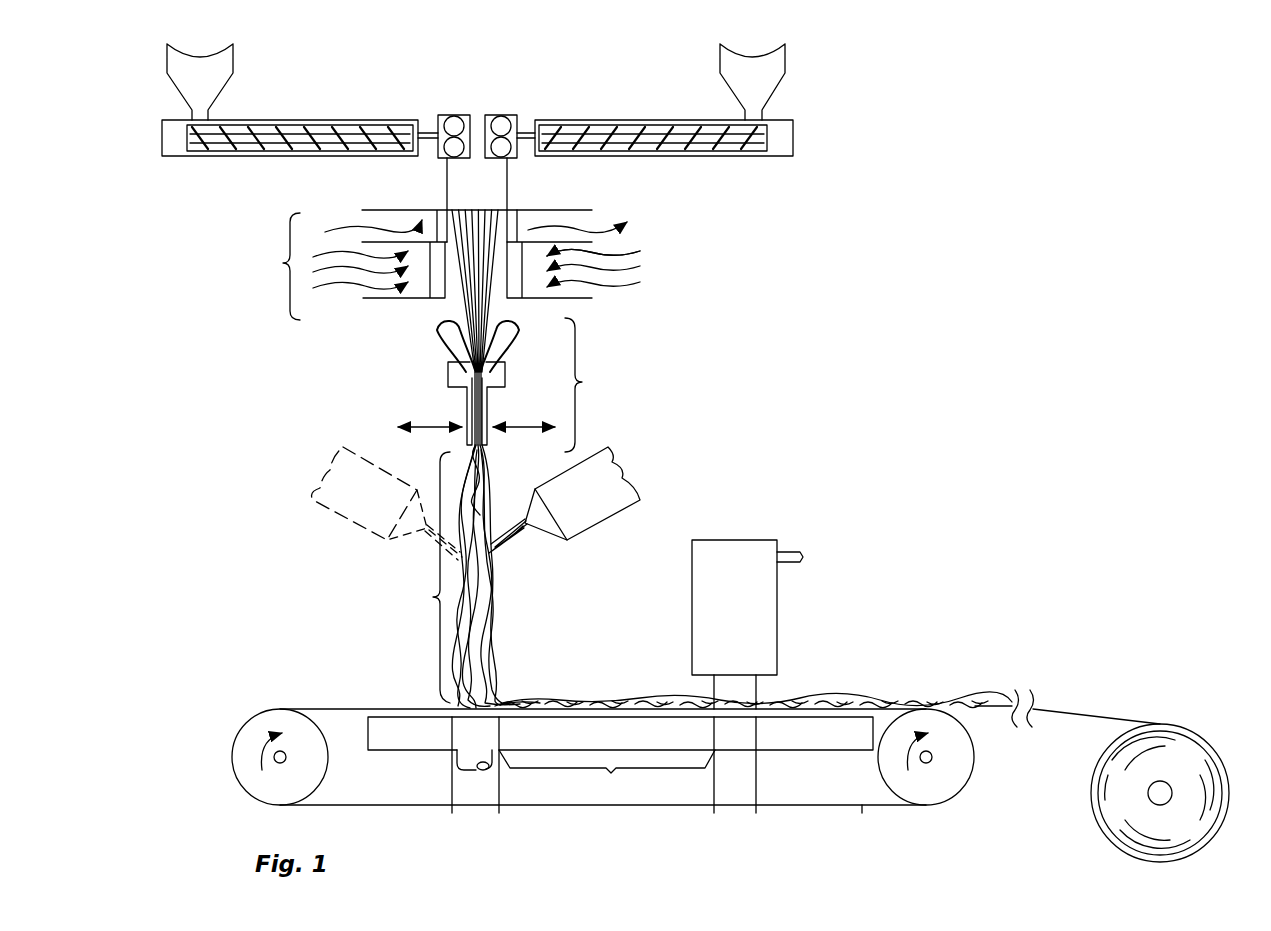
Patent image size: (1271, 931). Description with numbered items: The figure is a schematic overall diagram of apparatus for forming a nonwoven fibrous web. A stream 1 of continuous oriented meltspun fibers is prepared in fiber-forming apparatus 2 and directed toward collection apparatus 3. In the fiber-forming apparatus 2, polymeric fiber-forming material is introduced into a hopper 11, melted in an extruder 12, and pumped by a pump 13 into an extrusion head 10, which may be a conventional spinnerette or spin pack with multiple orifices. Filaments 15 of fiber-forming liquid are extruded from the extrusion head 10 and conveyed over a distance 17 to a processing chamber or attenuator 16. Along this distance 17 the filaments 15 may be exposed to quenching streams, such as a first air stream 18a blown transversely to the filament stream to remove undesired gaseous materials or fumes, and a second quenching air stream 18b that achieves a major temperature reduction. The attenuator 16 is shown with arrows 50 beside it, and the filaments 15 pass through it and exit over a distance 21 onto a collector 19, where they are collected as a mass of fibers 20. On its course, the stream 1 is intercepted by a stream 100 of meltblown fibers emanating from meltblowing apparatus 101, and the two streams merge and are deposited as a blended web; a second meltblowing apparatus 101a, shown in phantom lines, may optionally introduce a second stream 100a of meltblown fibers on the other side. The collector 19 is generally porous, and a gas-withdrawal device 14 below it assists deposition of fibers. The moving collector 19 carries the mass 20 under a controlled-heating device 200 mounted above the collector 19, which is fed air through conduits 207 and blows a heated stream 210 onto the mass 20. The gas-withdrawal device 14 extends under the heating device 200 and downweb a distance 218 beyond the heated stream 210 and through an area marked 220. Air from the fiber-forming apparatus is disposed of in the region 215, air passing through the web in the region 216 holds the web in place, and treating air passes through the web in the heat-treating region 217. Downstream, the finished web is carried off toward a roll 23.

The stream of continuous oriented meltspun fibers 1 is at (485, 487).
The fiber-forming apparatus 2 is at (732, 298).
The collection apparatus 3 is at (287, 668).
The extrusion head 10 is at (500, 184).
The hopper 11 is at (222, 70).
The extruder 12 is at (295, 118).
The pump 13 is at (490, 112).
The gas-withdrawal device 14 is at (403, 720).
The filaments 15 is at (462, 302).
The attenuator 16 is at (532, 385).
The distance 17 is at (445, 291).
The first air stream 18a is at (600, 218).
The second quenching air stream 18b is at (630, 257).
The collector 19 is at (345, 708).
The mass of fibers 20 is at (537, 693).
The distance 21 is at (425, 577).
The winder roll 23 is at (1203, 743).
The lateral movement of aspirator 50 is at (427, 422).
The stream of meltblown fibers 100 is at (507, 553).
The second stream of meltblown fibers 100a is at (430, 540).
The meltblowing apparatus 101 is at (628, 474).
The second meltblowing apparatus 101a is at (332, 510).
The controlled-heating device 200 is at (787, 525).
The conduits 207 is at (795, 555).
The heated stream 210 is at (713, 692).
The region 215 is at (499, 813).
The region 216 is at (607, 777).
The heat-treating region 217 is at (756, 813).
The distance 218 is at (862, 813).
The area 220 is at (995, 697).